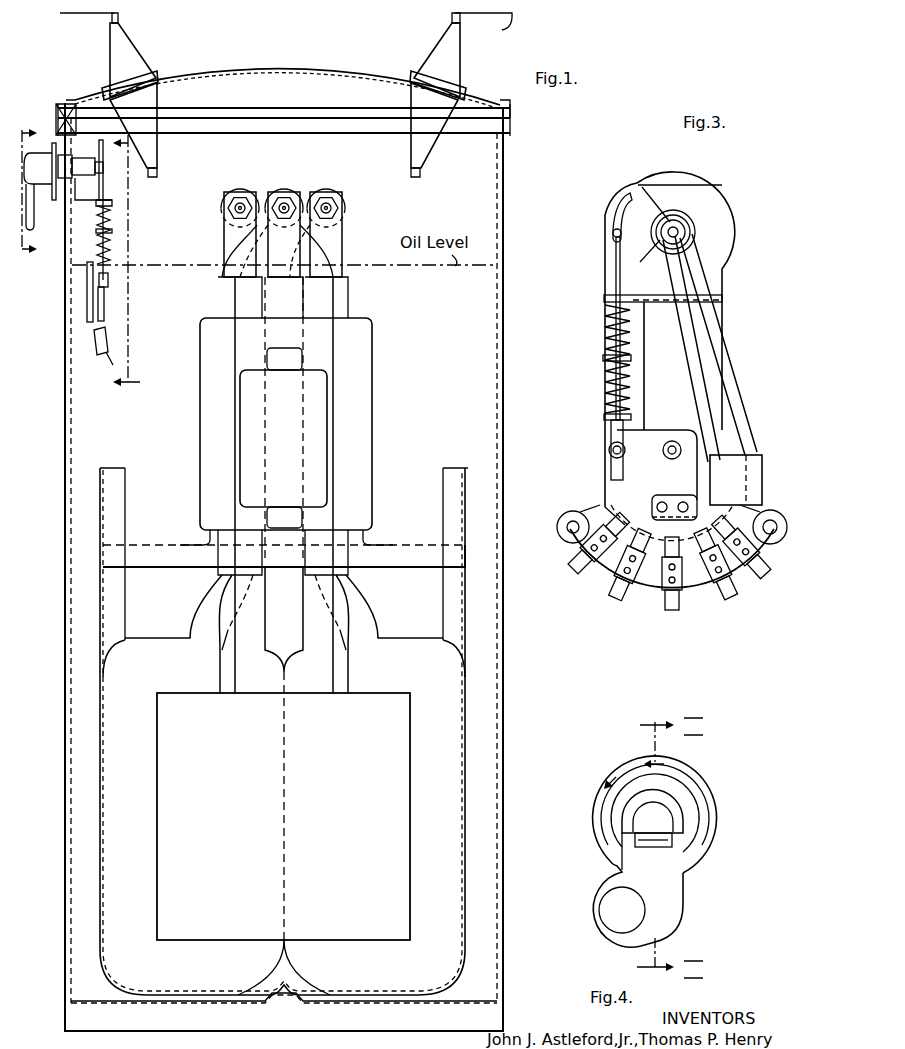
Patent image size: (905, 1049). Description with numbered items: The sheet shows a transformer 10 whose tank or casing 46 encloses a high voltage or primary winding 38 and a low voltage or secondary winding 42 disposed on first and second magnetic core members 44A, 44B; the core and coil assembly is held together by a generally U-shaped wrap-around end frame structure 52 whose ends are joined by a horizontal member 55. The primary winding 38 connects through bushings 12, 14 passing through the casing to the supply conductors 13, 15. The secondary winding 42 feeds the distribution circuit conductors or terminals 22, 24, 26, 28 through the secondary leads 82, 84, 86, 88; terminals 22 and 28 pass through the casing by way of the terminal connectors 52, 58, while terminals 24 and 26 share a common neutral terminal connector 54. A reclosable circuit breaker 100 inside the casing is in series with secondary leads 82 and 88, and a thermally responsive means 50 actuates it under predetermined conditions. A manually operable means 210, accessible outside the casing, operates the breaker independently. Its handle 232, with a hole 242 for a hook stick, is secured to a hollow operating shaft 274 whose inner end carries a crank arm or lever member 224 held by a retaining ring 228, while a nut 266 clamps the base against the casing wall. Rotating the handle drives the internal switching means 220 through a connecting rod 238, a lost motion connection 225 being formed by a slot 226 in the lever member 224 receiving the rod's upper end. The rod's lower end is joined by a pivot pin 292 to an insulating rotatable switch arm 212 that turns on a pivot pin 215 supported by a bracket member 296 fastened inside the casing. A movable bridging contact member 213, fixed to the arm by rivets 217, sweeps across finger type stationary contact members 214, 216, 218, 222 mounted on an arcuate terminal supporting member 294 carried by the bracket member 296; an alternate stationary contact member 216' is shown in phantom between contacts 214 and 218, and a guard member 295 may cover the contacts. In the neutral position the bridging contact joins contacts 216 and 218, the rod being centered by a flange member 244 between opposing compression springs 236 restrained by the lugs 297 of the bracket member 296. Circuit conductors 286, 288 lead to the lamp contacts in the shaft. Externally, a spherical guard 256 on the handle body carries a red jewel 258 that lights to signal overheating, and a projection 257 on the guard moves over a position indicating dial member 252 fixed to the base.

In FIG. 1, the transformer 10 is at (284, 1039).
In FIG. 1, the bushing 12 is at (128, 48).
In FIG. 1, the supply conductor 13 is at (80, 14).
In FIG. 1, the bushing 14 is at (440, 50).
In FIG. 1, the supply conductor 15 is at (488, 28).
In FIG. 1, the distribution circuit conductor 22 is at (244, 196).
In FIG. 1, the distribution circuit conductor 24 is at (280, 219).
In FIG. 1, the distribution circuit conductor 26 is at (288, 196).
In FIG. 1, the distribution circuit conductor 28 is at (336, 221).
In FIG. 1, the primary winding 38 is at (259, 816).
In FIG. 1, the secondary winding 42 is at (168, 868).
In FIG. 1, the first magnetic core member 44A is at (133, 972).
In FIG. 1, the second magnetic core member 44B is at (433, 972).
In FIG. 1, the casing 46 is at (65, 690).
In FIG. 1, the thermally responsive means 50 is at (247, 460).
In FIG. 1, the end frame structure 52 is at (110, 608).
In FIG. 1, the terminal connector 54 is at (282, 196).
In FIG. 1, the horizontal member 55 is at (408, 566).
In FIG. 1, the terminal connector 58 is at (345, 212).
In FIG. 1, the secondary lead 82 is at (203, 620).
In FIG. 1, the secondary lead 84 is at (257, 632).
In FIG. 1, the secondary lead 86 is at (312, 597).
In FIG. 1, the secondary lead 88 is at (357, 622).
In FIG. 1, the circuit breaker 100 is at (296, 485).
In FIG. 1, the manually operable means 210 is at (100, 240).
In FIG. 3, the manually operable means 210 is at (672, 575).
In FIG. 4, the manually operable means 210 is at (652, 849).
In FIG. 3, the rotatable switch arm 212 is at (630, 463).
In FIG. 3, the movable bridging contact member 213 is at (652, 520).
In FIG. 3, the stationary contact member 214 is at (590, 582).
In FIG. 3, the pivot pin 215 is at (672, 440).
In FIG. 3, the stationary contact member 216 is at (678, 586).
In FIG. 3, the stationary contact member 216' is at (656, 591).
In FIG. 3, the rivets 217 is at (682, 502).
In FIG. 3, the stationary contact member 218 is at (672, 610).
In FIG. 1, the switching means 220 is at (127, 252).
In FIG. 3, the switching means 220 is at (663, 339).
In FIG. 3, the stationary contact member 222 is at (759, 575).
In FIG. 1, the lever member 224 is at (104, 172).
In FIG. 3, the lever member 224 is at (645, 187).
In FIG. 3, the lost motion connection 225 is at (598, 232).
In FIG. 3, the slot 226 is at (620, 193).
In FIG. 3, the retaining ring 228 is at (672, 213).
In FIG. 1, the handle 232 is at (34, 214).
In FIG. 4, the handle 232 is at (641, 891).
In FIG. 1, the compression springs 236 is at (110, 220).
In FIG. 3, the compression springs 236 is at (607, 334).
In FIG. 1, the connecting rod 238 is at (108, 280).
In FIG. 3, the connecting rod 238 is at (614, 316).
In FIG. 4, the hole 242 is at (612, 922).
In FIG. 1, the flange member 244 is at (112, 231).
In FIG. 3, the flange member 244 is at (605, 358).
In FIG. 1, the position indicating member 252 is at (62, 162).
In FIG. 3, the position indicating member 252 is at (656, 291).
In FIG. 4, the position indicating member 252 is at (684, 766).
In FIG. 4, the guard 256 is at (618, 811).
In FIG. 4, the projection 257 is at (653, 811).
In FIG. 4, the jewel 258 is at (652, 847).
In FIG. 1, the nut 266 is at (100, 120).
In FIG. 3, the operating shaft 274 is at (643, 259).
In FIG. 3, the circuit conductor 286 is at (691, 380).
In FIG. 3, the circuit conductor 288 is at (732, 372).
In FIG. 3, the pivot pin 292 is at (608, 450).
In FIG. 3, the terminal supporting member 294 is at (582, 548).
In FIG. 3, the guard member 295 is at (745, 578).
In FIG. 1, the bracket member 296 is at (108, 203).
In FIG. 3, the bracket member 296 is at (712, 284).
In FIG. 3, the projecting members 297 is at (605, 300).